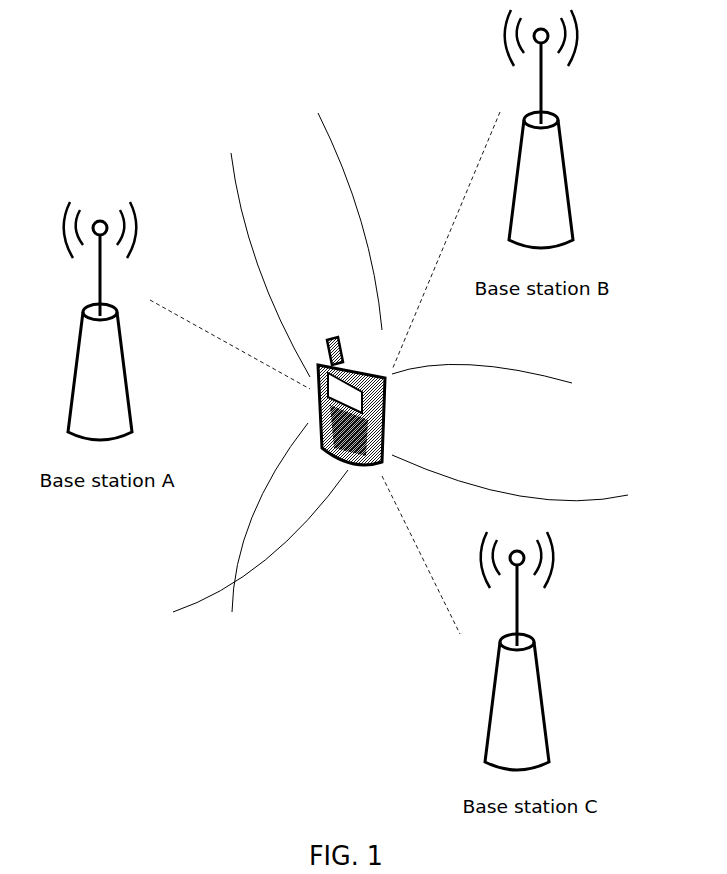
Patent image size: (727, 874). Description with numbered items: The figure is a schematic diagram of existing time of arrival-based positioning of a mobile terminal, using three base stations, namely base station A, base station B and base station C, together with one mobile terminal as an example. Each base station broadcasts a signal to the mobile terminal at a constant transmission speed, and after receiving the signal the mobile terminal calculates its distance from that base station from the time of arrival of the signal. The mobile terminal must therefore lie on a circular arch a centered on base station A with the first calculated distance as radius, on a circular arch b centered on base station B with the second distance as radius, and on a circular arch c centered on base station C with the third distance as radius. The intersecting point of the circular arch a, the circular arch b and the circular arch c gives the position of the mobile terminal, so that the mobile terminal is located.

The circular arch a is at (272, 351).
The circular arch b is at (410, 327).
The circular arch c is at (421, 490).